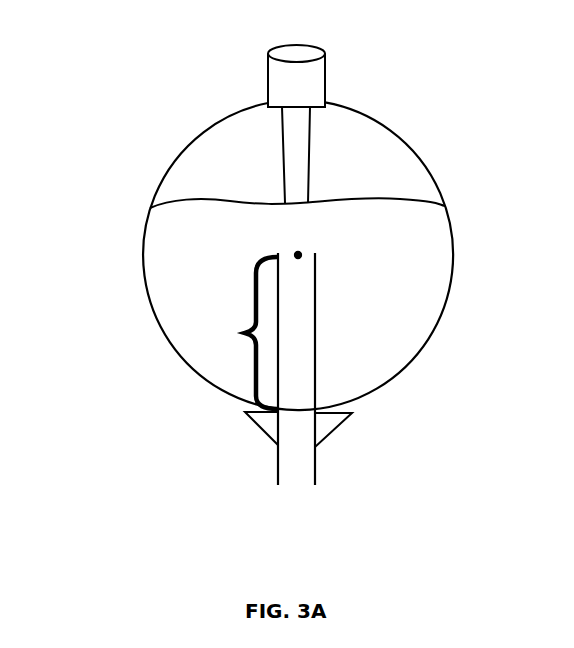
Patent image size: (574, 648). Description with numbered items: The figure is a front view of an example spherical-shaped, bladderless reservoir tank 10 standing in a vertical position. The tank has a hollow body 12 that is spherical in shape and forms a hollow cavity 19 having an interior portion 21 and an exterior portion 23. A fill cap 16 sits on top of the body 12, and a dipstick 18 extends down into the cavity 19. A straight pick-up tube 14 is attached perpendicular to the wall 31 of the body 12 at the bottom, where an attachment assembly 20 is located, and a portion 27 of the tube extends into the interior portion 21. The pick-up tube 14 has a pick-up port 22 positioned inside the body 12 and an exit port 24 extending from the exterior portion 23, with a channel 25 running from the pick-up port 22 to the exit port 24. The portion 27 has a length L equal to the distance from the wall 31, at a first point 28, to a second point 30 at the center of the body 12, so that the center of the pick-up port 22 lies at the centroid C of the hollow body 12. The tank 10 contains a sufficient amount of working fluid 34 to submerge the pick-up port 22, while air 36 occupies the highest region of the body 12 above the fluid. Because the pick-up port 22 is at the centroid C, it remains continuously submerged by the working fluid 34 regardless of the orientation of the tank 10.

The reservoir tank 10 is at (133, 332).
The hollow body 12 is at (455, 301).
The pick-up tube 14 is at (270, 467).
The fill cap 16 is at (332, 70).
The dipstick 18 is at (310, 147).
The hollow cavity 19 is at (241, 123).
The attachment assembly 20 is at (255, 428).
The interior portion 21 is at (408, 185).
The pick-up port 22 is at (308, 239).
The exterior portion 23 is at (130, 265).
The exit port 24 is at (293, 496).
The channel 25 is at (298, 307).
The portion of pick-up tube 27 is at (315, 365).
The first point 28 is at (265, 407).
The second point 30 is at (277, 253).
The wall 31 is at (373, 393).
The working fluid 34 is at (420, 255).
The air 36 is at (215, 163).
The centroid C is at (301, 258).
The length L is at (245, 333).